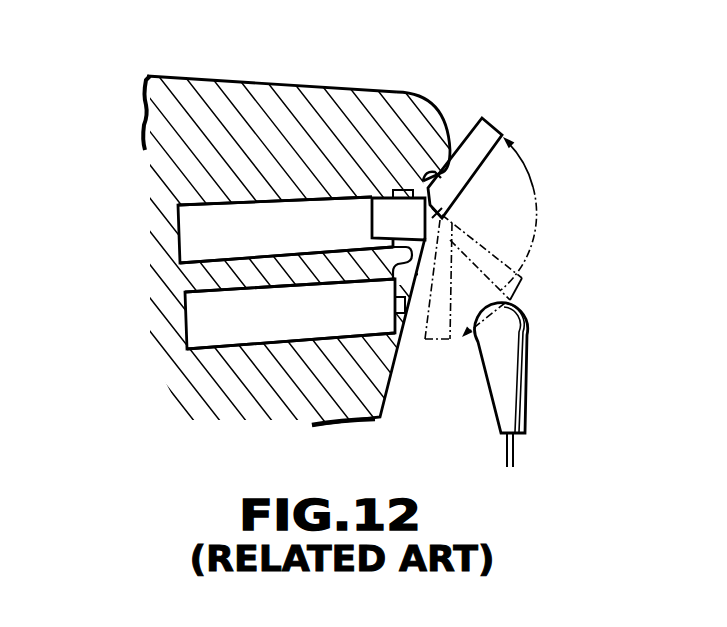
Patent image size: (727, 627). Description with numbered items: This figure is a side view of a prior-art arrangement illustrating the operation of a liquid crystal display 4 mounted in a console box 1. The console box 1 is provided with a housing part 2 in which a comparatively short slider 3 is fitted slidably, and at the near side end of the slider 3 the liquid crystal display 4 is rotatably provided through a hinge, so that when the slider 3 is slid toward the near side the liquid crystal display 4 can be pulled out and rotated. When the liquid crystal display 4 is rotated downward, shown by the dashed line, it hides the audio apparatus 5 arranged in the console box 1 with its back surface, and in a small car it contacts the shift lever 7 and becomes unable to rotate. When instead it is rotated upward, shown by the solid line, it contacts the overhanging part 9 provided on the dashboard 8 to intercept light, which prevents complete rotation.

The console box 1 is at (380, 384).
The housing part 2 is at (202, 207).
The slider 3 is at (385, 216).
The liquid crystal display 4 is at (485, 128).
The audio apparatus 5 is at (320, 323).
The shift lever 7 is at (512, 337).
The dashboard 8 is at (230, 90).
The overhanging part 9 is at (425, 118).